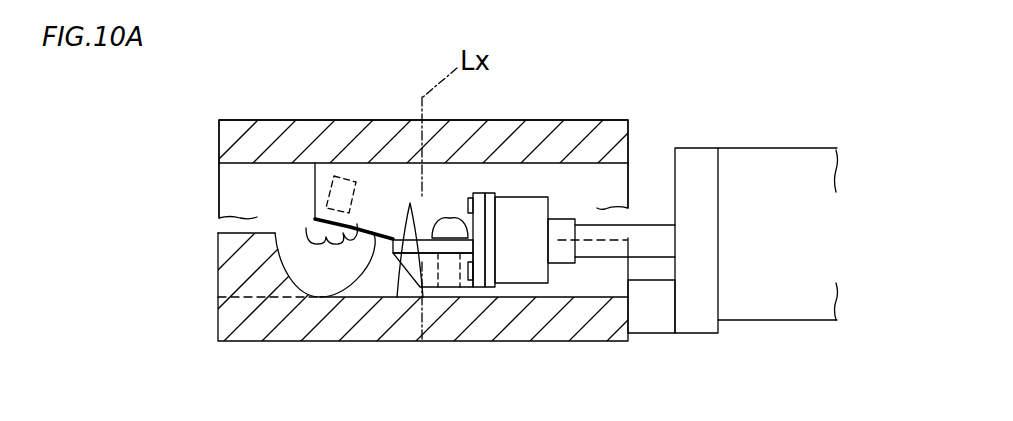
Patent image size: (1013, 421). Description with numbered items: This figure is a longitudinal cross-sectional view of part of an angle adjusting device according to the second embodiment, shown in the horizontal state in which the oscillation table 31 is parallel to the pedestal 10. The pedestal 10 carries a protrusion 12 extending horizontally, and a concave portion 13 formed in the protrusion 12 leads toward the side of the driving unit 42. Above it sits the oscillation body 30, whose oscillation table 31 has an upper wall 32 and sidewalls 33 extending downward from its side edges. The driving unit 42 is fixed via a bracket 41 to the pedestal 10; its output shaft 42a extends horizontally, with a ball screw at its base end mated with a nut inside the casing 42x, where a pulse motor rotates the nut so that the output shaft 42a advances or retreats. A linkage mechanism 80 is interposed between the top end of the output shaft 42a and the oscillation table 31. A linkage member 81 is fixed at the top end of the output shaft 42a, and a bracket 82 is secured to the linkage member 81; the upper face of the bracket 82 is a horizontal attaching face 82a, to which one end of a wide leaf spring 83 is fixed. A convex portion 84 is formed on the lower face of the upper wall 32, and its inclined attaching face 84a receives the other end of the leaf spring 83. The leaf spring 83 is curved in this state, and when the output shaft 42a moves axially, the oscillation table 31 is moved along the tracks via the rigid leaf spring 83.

The pedestal 10 is at (218, 294).
The protrusion 12 is at (233, 230).
The concave portion 13 is at (571, 297).
The oscillation body 30 is at (276, 118).
The oscillation table 31 is at (328, 118).
The upper wall 32 is at (238, 120).
The sidewall 33 is at (227, 188).
The bracket 41 is at (658, 318).
The driving unit 42 is at (760, 147).
The output shaft 42a is at (651, 222).
The casing 42x is at (765, 302).
The linkage mechanism 80 is at (513, 190).
The linkage member 81 is at (543, 195).
The bracket 82 is at (418, 275).
The attaching face 82a is at (397, 293).
The leaf spring 83 is at (340, 285).
The convex portion 84 is at (367, 195).
The inclined attaching face 84a is at (310, 232).